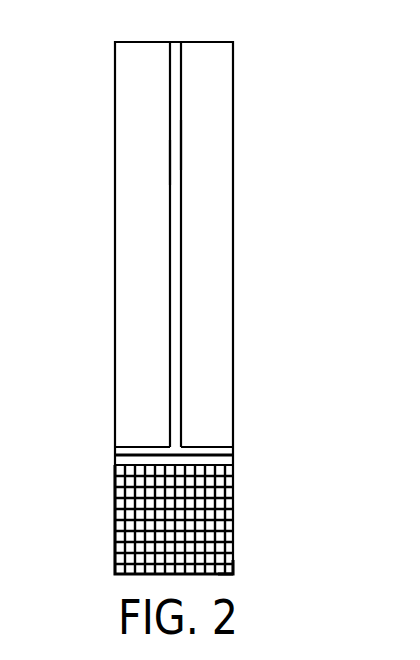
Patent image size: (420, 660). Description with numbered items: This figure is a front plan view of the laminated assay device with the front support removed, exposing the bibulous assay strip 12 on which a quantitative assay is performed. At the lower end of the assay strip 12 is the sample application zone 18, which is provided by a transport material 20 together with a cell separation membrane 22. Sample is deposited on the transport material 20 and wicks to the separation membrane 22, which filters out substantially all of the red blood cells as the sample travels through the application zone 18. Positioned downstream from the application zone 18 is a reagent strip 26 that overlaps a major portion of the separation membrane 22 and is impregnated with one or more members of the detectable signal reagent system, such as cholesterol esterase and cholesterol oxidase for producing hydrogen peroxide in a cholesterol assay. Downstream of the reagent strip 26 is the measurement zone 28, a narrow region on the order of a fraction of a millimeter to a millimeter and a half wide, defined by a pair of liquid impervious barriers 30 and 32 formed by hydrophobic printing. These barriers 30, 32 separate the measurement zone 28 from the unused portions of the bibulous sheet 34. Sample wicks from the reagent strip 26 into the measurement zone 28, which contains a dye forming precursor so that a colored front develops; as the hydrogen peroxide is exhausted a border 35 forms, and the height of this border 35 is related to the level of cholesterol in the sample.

The bibulous assay strip 12 is at (178, 108).
The sample application zone 18 is at (235, 518).
The transport material 20 is at (233, 573).
The cell separation membrane 22 is at (233, 462).
The reagent strip 26 is at (117, 453).
The measurement zone 28 is at (182, 143).
The liquid impervious barrier 30 is at (181, 278).
The liquid impervious barrier 32 is at (170, 333).
The bibulous sheet 34 is at (219, 343).
The border 35 is at (177, 163).